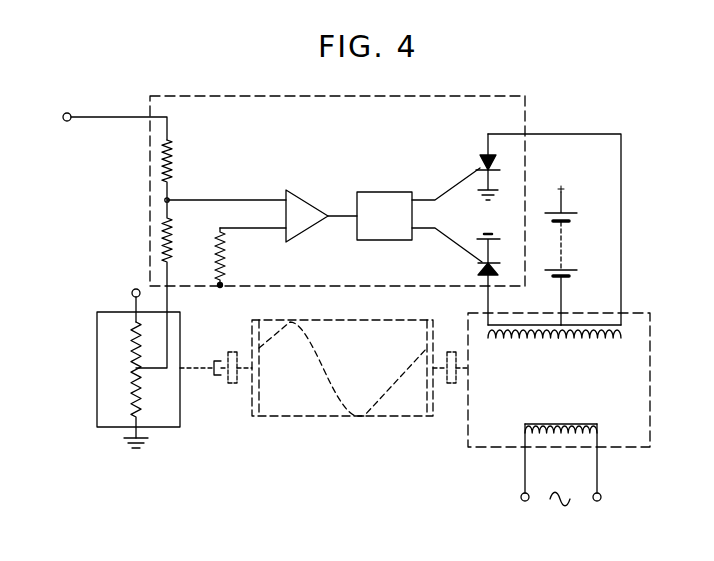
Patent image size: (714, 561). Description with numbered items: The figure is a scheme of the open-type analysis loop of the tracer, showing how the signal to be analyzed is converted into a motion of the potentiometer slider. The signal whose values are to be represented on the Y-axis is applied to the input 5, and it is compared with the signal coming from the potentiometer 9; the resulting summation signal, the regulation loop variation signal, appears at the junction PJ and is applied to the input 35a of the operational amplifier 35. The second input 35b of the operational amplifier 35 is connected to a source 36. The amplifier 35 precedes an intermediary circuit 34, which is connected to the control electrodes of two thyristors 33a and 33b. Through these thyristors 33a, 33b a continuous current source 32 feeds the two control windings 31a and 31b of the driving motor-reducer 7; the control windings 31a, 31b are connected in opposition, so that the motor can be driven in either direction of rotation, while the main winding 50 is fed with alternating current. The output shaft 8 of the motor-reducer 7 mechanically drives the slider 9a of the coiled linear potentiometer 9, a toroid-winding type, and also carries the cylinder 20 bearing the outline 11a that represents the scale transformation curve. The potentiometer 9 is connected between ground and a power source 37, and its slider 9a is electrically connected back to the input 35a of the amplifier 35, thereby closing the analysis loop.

The input 5 is at (67, 113).
The junction point PJ is at (170, 198).
The input of the operational amplifier 35a is at (238, 198).
The second input of the operational amplifier 35b is at (240, 229).
The operational amplifier 35 is at (312, 188).
The source 36 is at (219, 288).
The intermediary circuit 34 is at (390, 191).
The thyristor 33b is at (480, 160).
The thyristor 33a is at (478, 268).
The continuous current source 32 is at (566, 252).
The driving motor-reducer 7 is at (655, 353).
The control winding 31a is at (522, 338).
The control winding 31b is at (598, 338).
The power supply coil 50 is at (572, 422).
The coiled linear potentiometer 9 is at (94, 374).
The power source 37 is at (133, 290).
The slider 9a is at (140, 373).
The output shaft 8 is at (191, 371).
The cam device 20 is at (296, 422).
The cam profile 11a is at (333, 388).